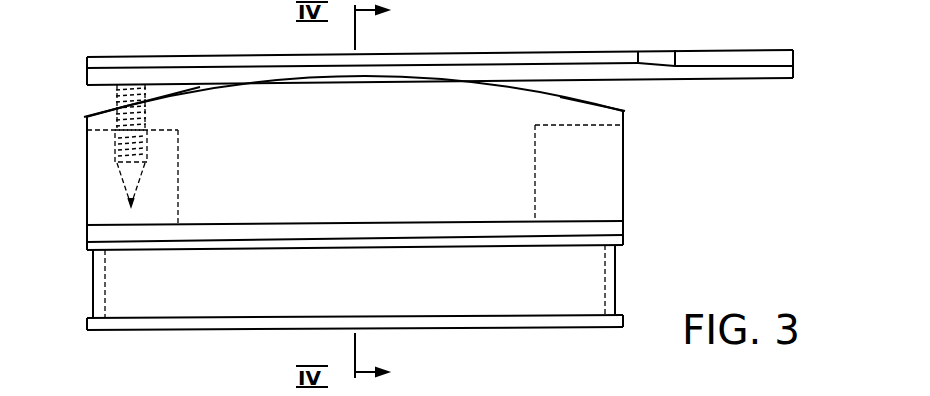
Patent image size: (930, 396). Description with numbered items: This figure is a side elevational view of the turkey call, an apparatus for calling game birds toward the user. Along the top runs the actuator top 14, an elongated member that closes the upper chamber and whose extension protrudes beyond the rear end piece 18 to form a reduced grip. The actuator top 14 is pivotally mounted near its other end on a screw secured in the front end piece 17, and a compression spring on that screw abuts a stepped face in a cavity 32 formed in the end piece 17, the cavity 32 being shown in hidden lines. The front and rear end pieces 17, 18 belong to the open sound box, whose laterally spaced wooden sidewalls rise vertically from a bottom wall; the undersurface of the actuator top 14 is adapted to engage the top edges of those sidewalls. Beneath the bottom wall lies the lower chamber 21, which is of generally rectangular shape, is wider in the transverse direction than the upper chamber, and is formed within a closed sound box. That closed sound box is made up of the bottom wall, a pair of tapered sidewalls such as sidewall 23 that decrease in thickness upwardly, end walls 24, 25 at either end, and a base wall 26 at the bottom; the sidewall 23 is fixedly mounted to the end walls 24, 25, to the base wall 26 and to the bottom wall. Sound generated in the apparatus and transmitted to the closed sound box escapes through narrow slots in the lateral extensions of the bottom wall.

The actuator top 14 is at (451, 52).
The front end piece 17 is at (113, 188).
The rear end piece 18 is at (579, 147).
The lower chamber 21 is at (358, 299).
The sidewall 23 is at (425, 288).
The end wall 24 is at (93, 288).
The end wall 25 is at (617, 285).
The base wall 26 is at (534, 328).
The cavity 32 is at (150, 150).